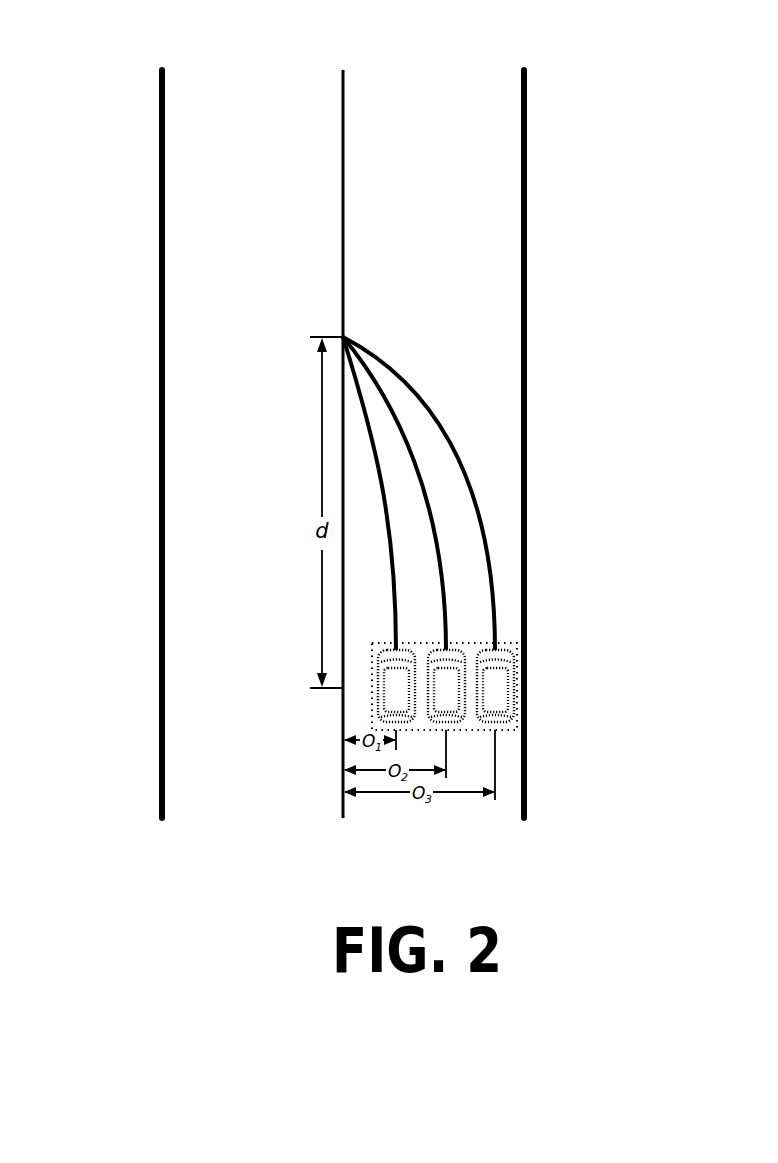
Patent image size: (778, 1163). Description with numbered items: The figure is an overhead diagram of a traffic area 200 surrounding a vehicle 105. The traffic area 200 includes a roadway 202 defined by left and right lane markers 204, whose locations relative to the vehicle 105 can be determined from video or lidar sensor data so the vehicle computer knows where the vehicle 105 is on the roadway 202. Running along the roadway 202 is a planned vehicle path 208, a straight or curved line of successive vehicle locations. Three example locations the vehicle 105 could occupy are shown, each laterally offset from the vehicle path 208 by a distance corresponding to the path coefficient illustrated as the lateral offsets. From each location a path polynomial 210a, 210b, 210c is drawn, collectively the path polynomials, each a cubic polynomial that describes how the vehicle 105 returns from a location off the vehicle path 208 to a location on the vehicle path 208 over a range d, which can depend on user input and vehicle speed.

The traffic area 200 is at (262, 64).
The roadway 202 is at (256, 772).
The lane markers 204 is at (160, 466).
The planned vehicle path 208 is at (343, 808).
The path polynomial 210a is at (372, 427).
The path polynomial 210b is at (405, 420).
The path polynomial 210c is at (443, 413).
The vehicle 105 is at (473, 643).